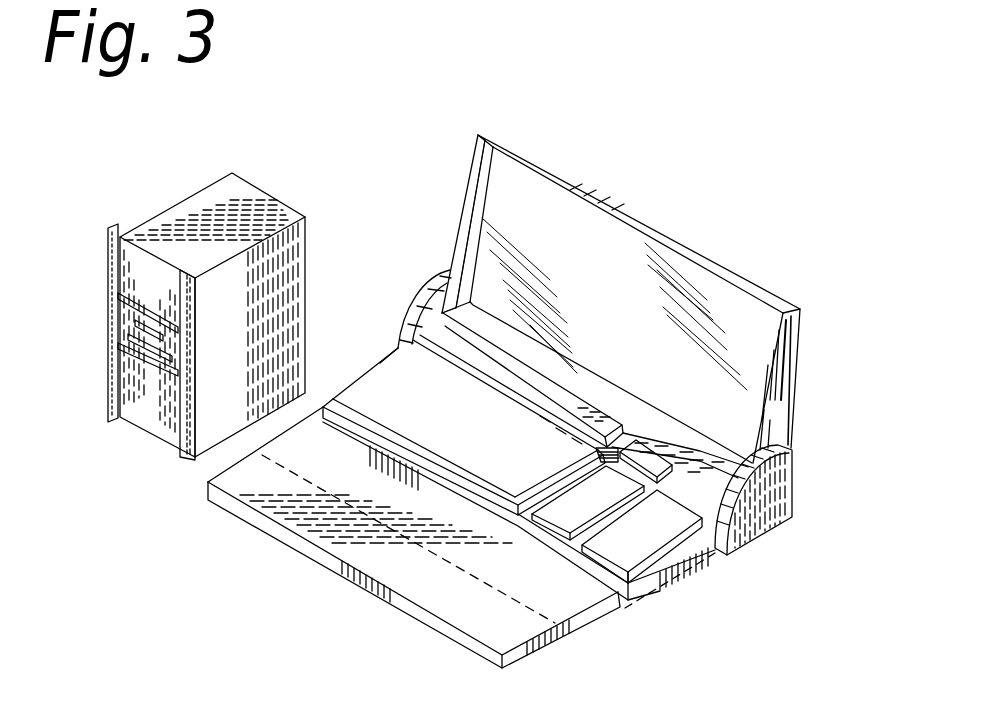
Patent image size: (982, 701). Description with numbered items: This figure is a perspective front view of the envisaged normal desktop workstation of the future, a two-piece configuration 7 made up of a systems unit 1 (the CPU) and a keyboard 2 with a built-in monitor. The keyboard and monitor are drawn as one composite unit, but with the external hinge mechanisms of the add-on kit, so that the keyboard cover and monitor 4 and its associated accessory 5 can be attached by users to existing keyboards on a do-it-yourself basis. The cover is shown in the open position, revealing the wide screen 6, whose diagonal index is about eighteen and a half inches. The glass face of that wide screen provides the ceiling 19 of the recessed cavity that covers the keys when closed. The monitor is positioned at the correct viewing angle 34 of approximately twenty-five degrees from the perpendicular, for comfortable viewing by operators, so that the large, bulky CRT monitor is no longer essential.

The systems unit 1 is at (108, 310).
The keyboard 2 is at (652, 533).
The keyboard cover and monitor 4 is at (662, 230).
The associated accessory 5 is at (531, 582).
The wide screen 6 is at (628, 307).
The two-piece configuration 7 is at (438, 213).
The ceiling 19 is at (623, 430).
The monitor viewing angle 34 is at (537, 192).